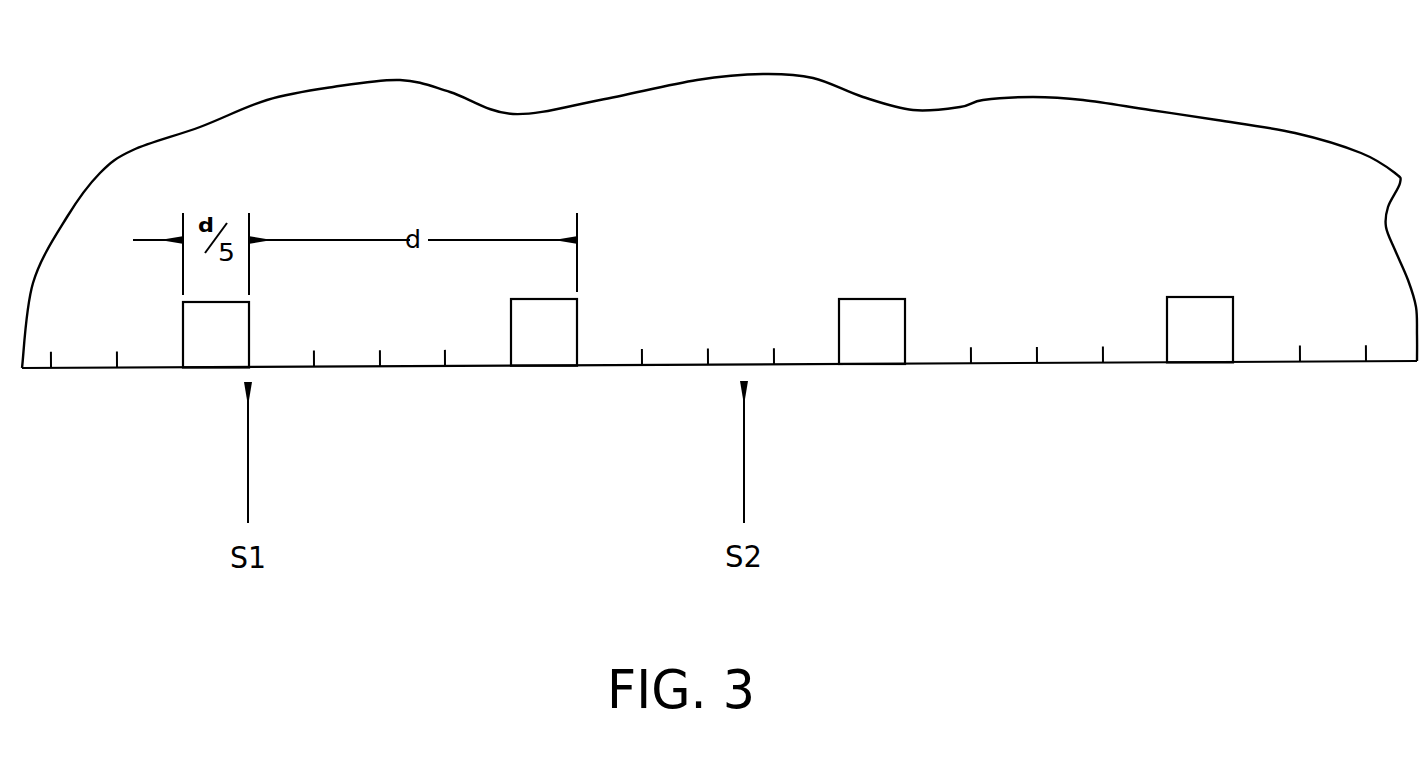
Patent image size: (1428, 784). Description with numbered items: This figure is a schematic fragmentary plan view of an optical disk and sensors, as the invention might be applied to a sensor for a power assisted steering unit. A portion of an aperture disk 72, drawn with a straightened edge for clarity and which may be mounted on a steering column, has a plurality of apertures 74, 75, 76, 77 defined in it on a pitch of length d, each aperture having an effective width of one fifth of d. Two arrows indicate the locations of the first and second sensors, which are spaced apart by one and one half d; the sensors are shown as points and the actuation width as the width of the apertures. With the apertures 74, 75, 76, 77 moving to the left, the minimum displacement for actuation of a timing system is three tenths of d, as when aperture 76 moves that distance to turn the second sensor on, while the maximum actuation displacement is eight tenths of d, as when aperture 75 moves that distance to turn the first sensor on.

The aperture disk 72 is at (1013, 133).
The aperture 74 is at (218, 332).
The aperture 75 is at (547, 330).
The aperture 76 is at (877, 328).
The aperture 77 is at (1203, 327).